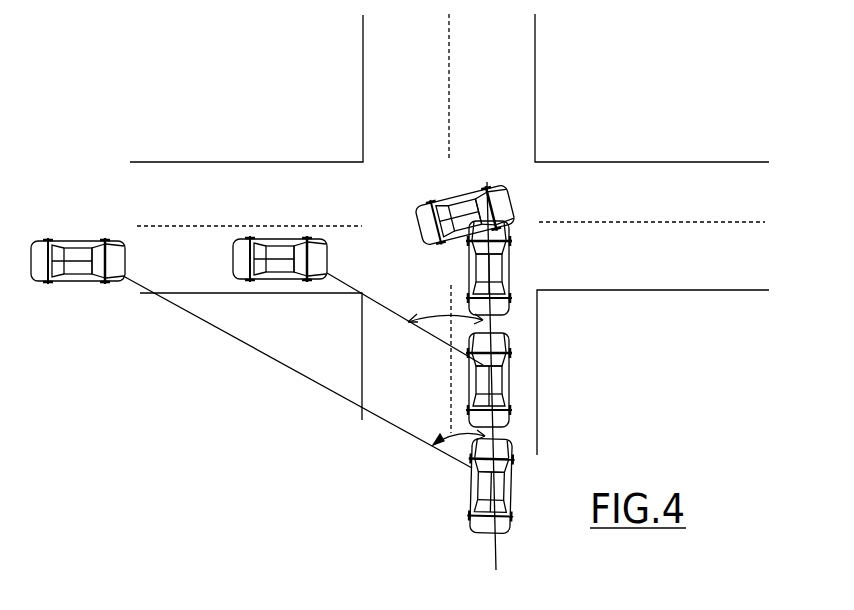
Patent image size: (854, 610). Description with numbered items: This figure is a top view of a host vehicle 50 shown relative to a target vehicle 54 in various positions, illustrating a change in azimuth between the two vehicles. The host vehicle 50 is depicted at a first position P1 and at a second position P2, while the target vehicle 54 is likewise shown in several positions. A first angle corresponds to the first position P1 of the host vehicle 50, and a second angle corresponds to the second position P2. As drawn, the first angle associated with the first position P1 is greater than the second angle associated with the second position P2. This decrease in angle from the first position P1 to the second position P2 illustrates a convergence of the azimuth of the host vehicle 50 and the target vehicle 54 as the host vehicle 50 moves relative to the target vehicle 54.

The host vehicle 50 is at (598, 377).
The target vehicle 54 is at (78, 245).
The first position P1 is at (588, 485).
The second position P2 is at (598, 374).